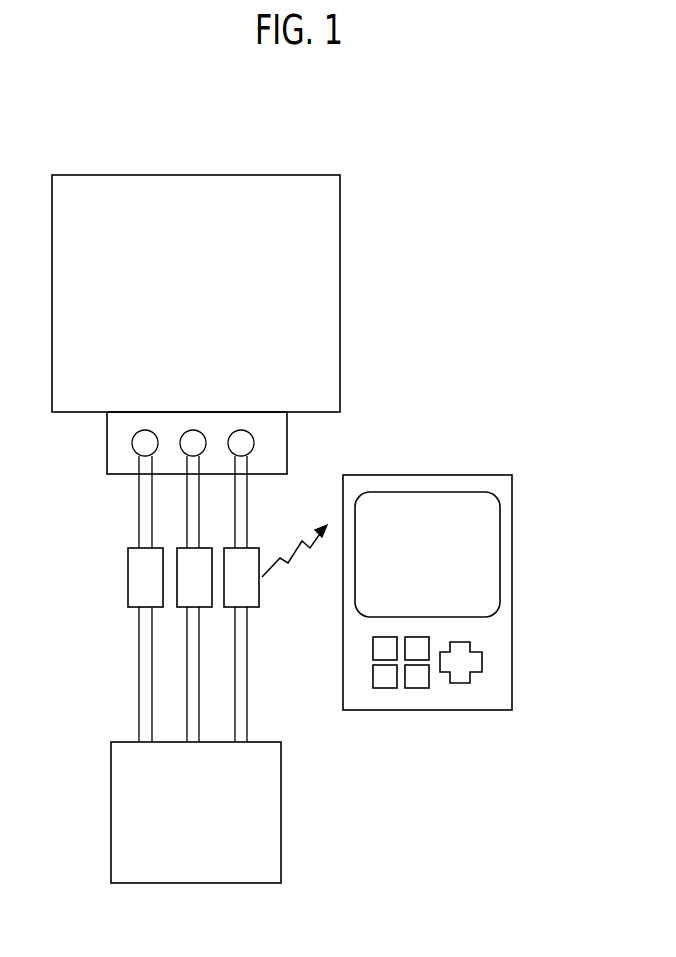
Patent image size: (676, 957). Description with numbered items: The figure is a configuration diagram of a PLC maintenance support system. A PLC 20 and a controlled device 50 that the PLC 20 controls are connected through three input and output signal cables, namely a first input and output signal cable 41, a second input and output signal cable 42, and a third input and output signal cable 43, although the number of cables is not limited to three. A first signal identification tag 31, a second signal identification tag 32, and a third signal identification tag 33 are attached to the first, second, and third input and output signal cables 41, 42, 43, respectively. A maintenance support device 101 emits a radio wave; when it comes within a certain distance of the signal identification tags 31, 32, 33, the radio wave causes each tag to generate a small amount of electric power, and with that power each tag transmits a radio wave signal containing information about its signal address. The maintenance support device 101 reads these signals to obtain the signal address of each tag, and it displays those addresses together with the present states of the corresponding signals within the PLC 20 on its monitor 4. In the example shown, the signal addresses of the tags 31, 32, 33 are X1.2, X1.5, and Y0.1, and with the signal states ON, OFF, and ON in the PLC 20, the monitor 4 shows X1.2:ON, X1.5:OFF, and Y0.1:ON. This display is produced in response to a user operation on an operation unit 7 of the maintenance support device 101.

The controlled device 50 is at (295, 175).
The first signal identification tag 31 is at (229, 548).
The second signal identification tag 32 is at (182, 548).
The third signal identification tag 33 is at (128, 568).
The first input and output signal cable 41 is at (235, 648).
The second input and output signal cable 42 is at (187, 688).
The third input and output signal cable 43 is at (139, 708).
The PLC 20 is at (281, 798).
The maintenance support device 101 is at (461, 562).
The monitor 4 is at (500, 562).
The operation unit 7 is at (526, 635).